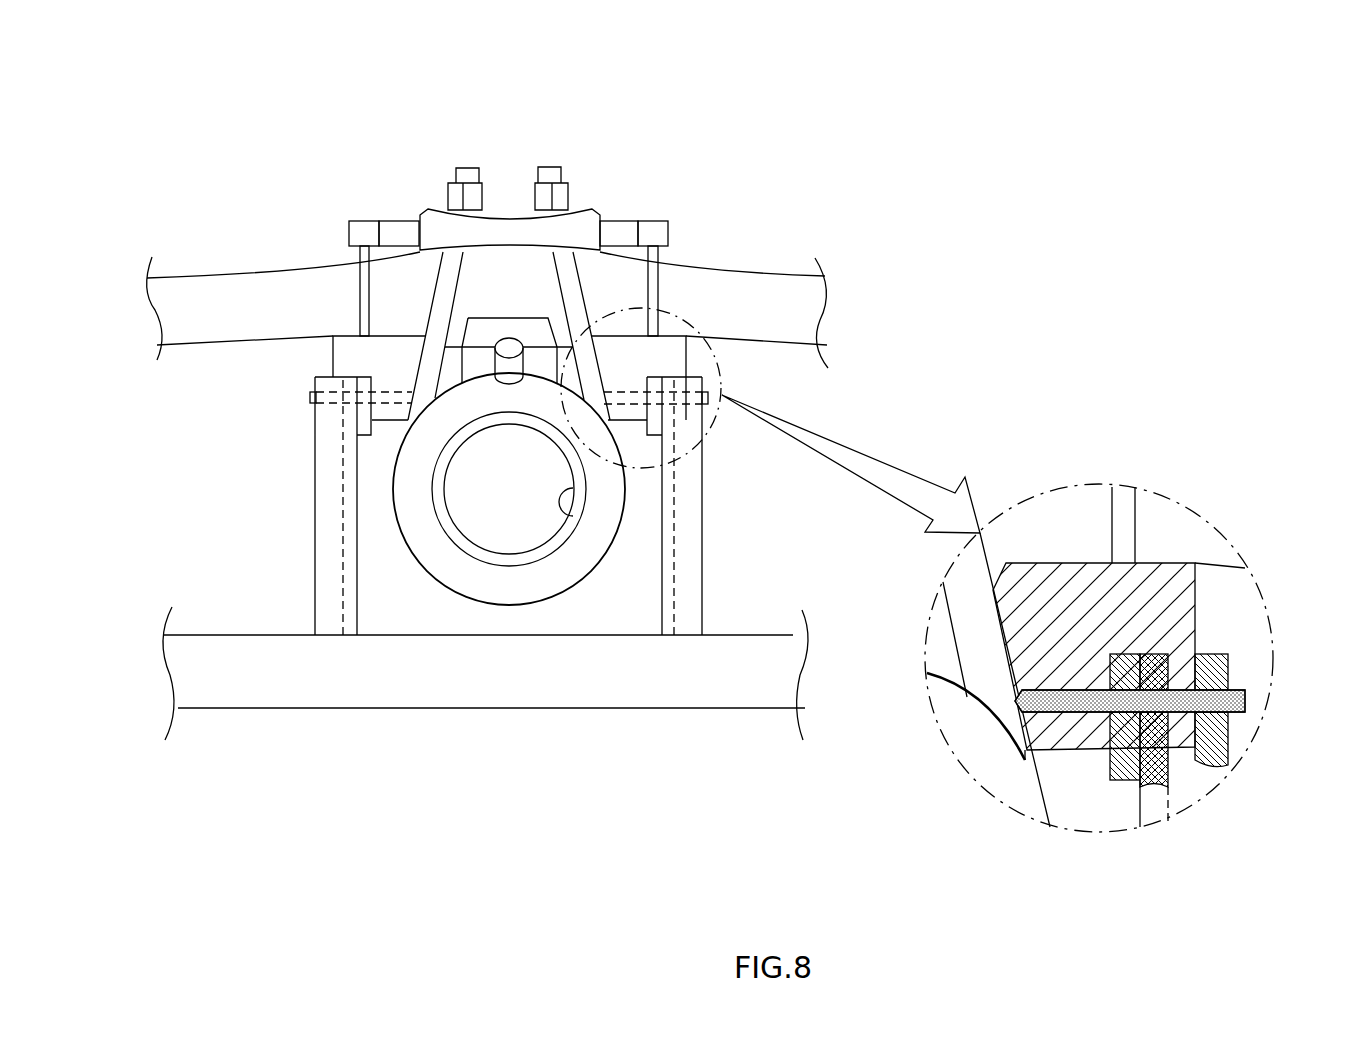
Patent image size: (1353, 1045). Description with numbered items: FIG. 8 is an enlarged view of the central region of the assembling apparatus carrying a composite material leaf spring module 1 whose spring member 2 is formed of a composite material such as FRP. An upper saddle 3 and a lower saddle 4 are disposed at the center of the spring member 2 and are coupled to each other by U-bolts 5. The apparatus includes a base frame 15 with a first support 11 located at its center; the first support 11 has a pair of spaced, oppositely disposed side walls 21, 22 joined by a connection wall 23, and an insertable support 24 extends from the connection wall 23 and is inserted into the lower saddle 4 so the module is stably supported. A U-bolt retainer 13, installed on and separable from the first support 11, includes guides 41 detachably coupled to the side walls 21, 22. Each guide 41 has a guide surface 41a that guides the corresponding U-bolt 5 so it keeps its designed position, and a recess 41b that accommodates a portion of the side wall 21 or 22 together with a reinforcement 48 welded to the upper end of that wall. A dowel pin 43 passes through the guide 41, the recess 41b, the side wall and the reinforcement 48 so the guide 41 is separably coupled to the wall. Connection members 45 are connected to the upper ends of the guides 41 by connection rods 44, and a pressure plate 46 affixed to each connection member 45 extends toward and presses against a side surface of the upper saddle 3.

The composite material leaf spring module 1 is at (750, 238).
The spring member 2 is at (778, 276).
The upper saddle 3 is at (508, 228).
The lower saddle 4 is at (510, 585).
The U-bolt 5 is at (572, 293).
The first support 11 is at (270, 505).
The U-bolt retainer 13 is at (278, 364).
The base frame 15 is at (307, 693).
The side wall 21 is at (357, 593).
The side wall 22 is at (662, 592).
The connection wall 23 is at (578, 622).
The insertable support 24 is at (572, 487).
The guide 41 is at (352, 362).
The guide surface 41a is at (1003, 645).
The recess 41b is at (1108, 668).
The dowel pin 43 is at (310, 398).
The connection rod 44 is at (363, 288).
The connection member 45 is at (368, 232).
The pressure plate 46 is at (398, 228).
The reinforcement 48 is at (1110, 785).